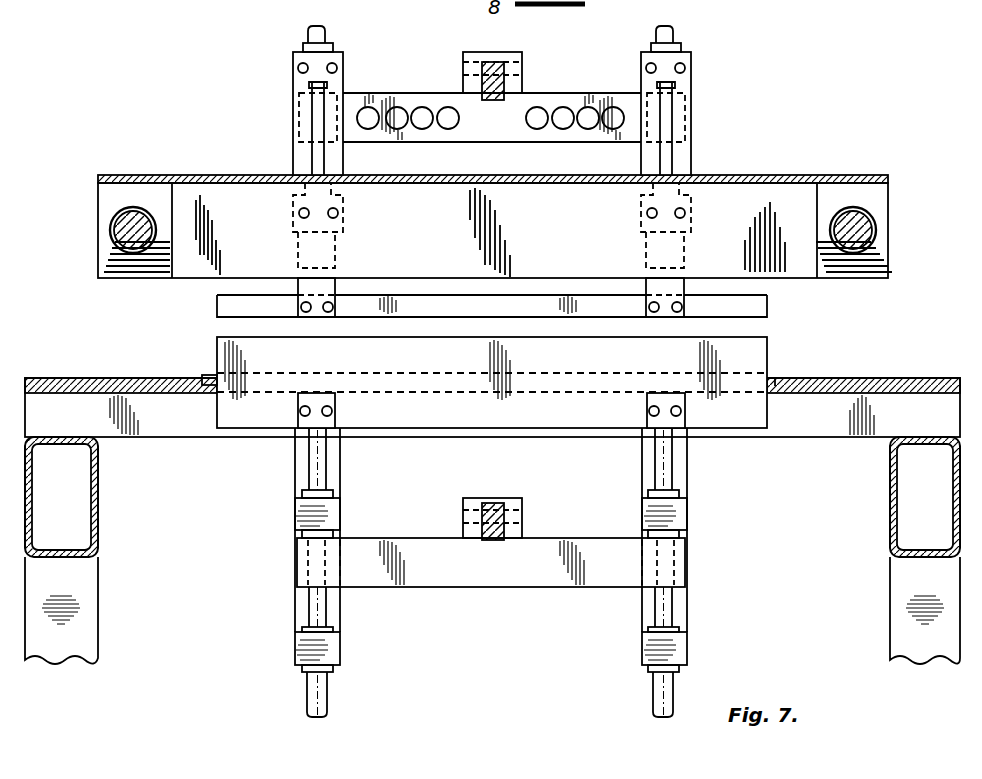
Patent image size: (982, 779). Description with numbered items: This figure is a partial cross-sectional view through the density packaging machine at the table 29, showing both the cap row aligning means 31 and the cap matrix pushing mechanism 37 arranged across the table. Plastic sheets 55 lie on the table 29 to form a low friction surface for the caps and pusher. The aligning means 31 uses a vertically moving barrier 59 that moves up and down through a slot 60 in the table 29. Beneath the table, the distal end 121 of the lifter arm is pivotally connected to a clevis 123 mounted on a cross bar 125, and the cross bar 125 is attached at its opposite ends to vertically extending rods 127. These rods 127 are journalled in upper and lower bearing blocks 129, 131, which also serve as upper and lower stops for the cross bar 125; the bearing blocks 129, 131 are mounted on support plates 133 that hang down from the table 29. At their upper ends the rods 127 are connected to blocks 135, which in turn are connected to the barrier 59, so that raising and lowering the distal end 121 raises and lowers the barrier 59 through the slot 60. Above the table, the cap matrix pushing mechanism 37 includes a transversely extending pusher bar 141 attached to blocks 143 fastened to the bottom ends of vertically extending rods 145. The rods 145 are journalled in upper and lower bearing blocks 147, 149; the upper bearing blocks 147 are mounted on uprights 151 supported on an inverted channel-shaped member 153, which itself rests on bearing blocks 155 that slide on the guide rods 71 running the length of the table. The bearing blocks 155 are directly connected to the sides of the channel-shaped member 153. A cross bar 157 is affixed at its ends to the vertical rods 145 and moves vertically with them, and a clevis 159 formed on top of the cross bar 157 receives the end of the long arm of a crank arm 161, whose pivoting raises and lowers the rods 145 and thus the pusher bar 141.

The table 29 is at (882, 378).
The cap row aligning means 31 is at (192, 364).
The cap matrix pushing mechanism 37 is at (790, 292).
The sheets 55 is at (776, 378).
The vertically moving barrier 59 is at (228, 337).
The slot 60 is at (770, 392).
The guide rods 71 is at (126, 232).
The distal end 121 is at (490, 503).
The clevis 123 is at (522, 512).
The cross bar 125 is at (572, 586).
The vertically extending rods 127 is at (310, 460).
The upper bearing blocks 129 is at (340, 516).
The lower bearing blocks 131 is at (293, 652).
The support plates 133 is at (293, 610).
The blocks 135 is at (320, 426).
The pusher bar 141 is at (217, 305).
The blocks 143 is at (330, 288).
The vertically extending rods 145 is at (318, 27).
The upper bearing blocks 147 is at (293, 68).
The lower bearing blocks 149 is at (293, 212).
The uprights 151 is at (293, 158).
The inverted channel-shaped member 153 is at (846, 175).
The bearing blocks 155 is at (110, 259).
The cross bar 157 is at (506, 138).
The clevis 159 is at (522, 86).
The crank arm 161 is at (494, 62).